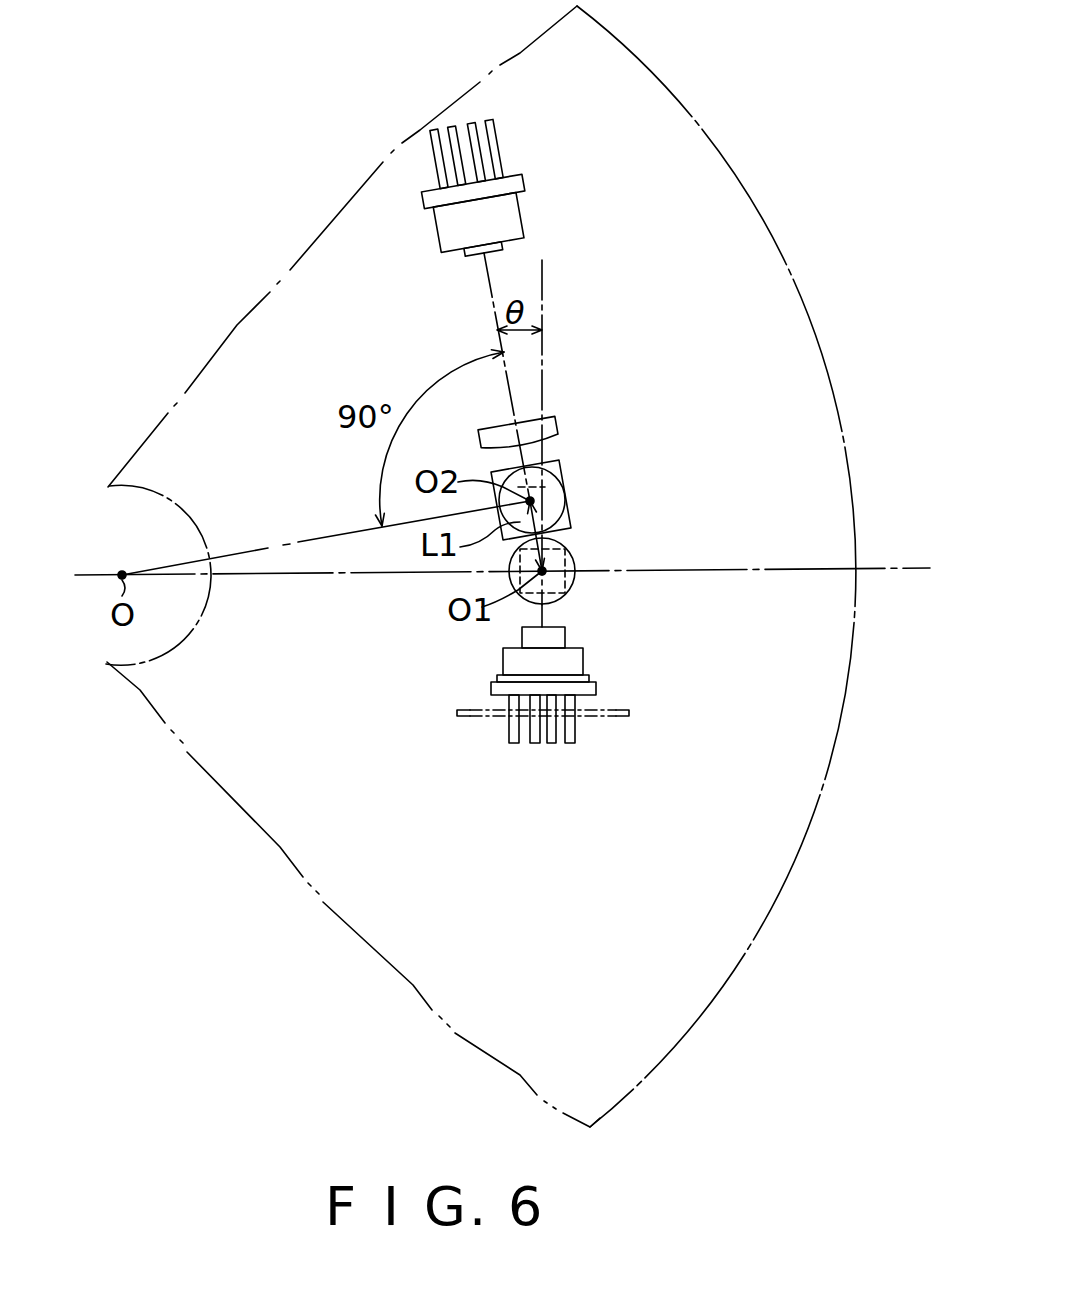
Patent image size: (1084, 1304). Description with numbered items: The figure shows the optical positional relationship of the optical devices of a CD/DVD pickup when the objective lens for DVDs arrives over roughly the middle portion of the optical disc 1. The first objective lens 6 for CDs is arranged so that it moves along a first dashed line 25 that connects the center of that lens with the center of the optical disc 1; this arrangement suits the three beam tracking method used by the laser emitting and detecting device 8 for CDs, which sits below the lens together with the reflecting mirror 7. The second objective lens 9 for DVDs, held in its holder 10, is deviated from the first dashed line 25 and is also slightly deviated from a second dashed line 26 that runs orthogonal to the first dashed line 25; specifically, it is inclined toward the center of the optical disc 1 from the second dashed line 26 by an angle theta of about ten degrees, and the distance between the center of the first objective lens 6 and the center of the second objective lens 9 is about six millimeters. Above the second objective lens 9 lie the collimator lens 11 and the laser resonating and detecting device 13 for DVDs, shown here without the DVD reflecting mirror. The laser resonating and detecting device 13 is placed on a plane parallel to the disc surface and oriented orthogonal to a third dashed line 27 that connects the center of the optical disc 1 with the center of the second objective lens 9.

The optical disc 1 is at (798, 333).
The first objective lens 6 is at (572, 553).
The reflecting mirror 7 is at (570, 588).
The laser emitting and detecting device 8 is at (575, 662).
The second objective lens 9 is at (552, 492).
The mirror holder 10 is at (572, 515).
The collimator lens 11 is at (556, 431).
The laser resonating and detecting device 13 is at (441, 230).
The first dashed line 25 is at (268, 580).
The second dashed line 26 is at (545, 272).
The third dashed line 27 is at (268, 548).